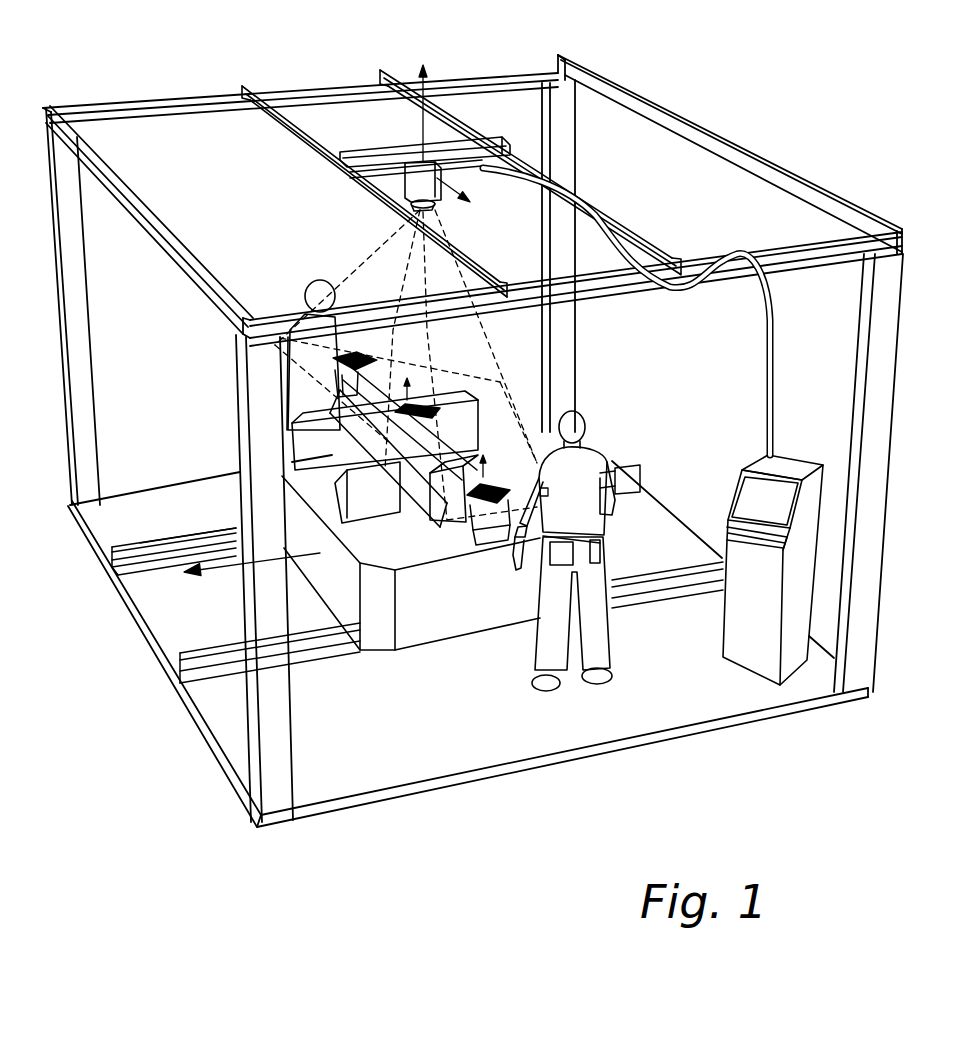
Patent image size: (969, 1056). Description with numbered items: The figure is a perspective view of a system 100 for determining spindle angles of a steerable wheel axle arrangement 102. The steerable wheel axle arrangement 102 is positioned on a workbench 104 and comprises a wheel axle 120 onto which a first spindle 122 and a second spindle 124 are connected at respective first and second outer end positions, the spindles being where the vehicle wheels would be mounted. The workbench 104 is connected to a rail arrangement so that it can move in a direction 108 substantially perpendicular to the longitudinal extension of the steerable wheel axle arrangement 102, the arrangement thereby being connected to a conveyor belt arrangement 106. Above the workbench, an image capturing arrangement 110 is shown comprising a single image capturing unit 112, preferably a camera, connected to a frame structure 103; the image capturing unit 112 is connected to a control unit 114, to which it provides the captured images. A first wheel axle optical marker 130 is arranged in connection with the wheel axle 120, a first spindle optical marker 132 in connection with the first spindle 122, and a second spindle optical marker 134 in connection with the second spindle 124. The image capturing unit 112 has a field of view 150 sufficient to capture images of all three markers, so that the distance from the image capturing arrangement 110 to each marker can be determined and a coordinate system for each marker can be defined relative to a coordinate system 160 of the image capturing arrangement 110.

The system 100 is at (758, 68).
The steerable wheel axle arrangement 102 is at (400, 360).
The frame structure 103 is at (52, 103).
The workbench 104 is at (410, 627).
The conveyor belt arrangement 106 is at (114, 572).
The direction 108 is at (228, 565).
The image capturing arrangement 110 is at (396, 124).
The image capturing unit 112 is at (418, 163).
The control unit 114 is at (760, 657).
The wheel axle 120 is at (377, 388).
The first spindle 122 is at (345, 372).
The second spindle 124 is at (470, 540).
The first wheel axle optical marker 130 is at (292, 435).
The first spindle optical marker 132 is at (352, 352).
The second spindle optical marker 134 is at (538, 493).
The field of view 150 is at (503, 372).
The coordinate system 160 is at (487, 158).